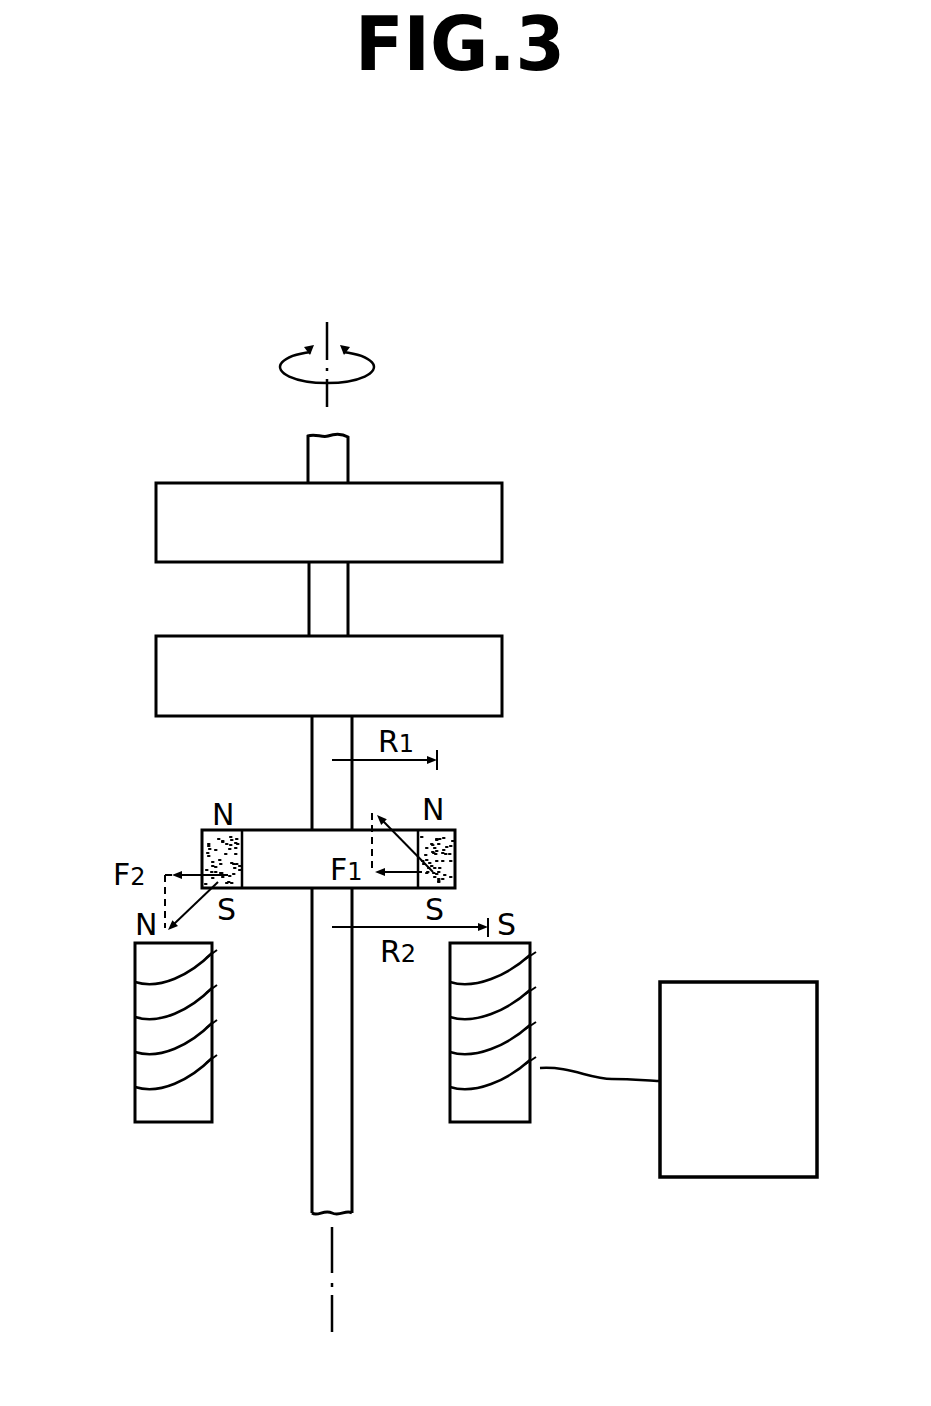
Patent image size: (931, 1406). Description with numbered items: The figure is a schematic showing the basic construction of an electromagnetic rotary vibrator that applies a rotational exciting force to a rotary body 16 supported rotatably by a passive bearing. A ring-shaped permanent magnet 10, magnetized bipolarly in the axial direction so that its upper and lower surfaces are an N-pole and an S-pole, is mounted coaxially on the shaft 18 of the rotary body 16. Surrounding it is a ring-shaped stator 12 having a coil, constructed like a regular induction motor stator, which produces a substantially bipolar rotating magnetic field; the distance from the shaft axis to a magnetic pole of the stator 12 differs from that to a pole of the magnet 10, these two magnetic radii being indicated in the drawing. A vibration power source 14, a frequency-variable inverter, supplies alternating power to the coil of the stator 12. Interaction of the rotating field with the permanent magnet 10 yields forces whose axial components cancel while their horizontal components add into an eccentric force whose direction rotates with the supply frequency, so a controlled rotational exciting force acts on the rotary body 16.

The ring-shaped permanent magnet 10 is at (445, 853).
The ring-shaped stator 12 is at (523, 1020).
The vibration power source 14 is at (738, 992).
The rotary body 16 is at (521, 529).
The shaft 18 is at (348, 1168).